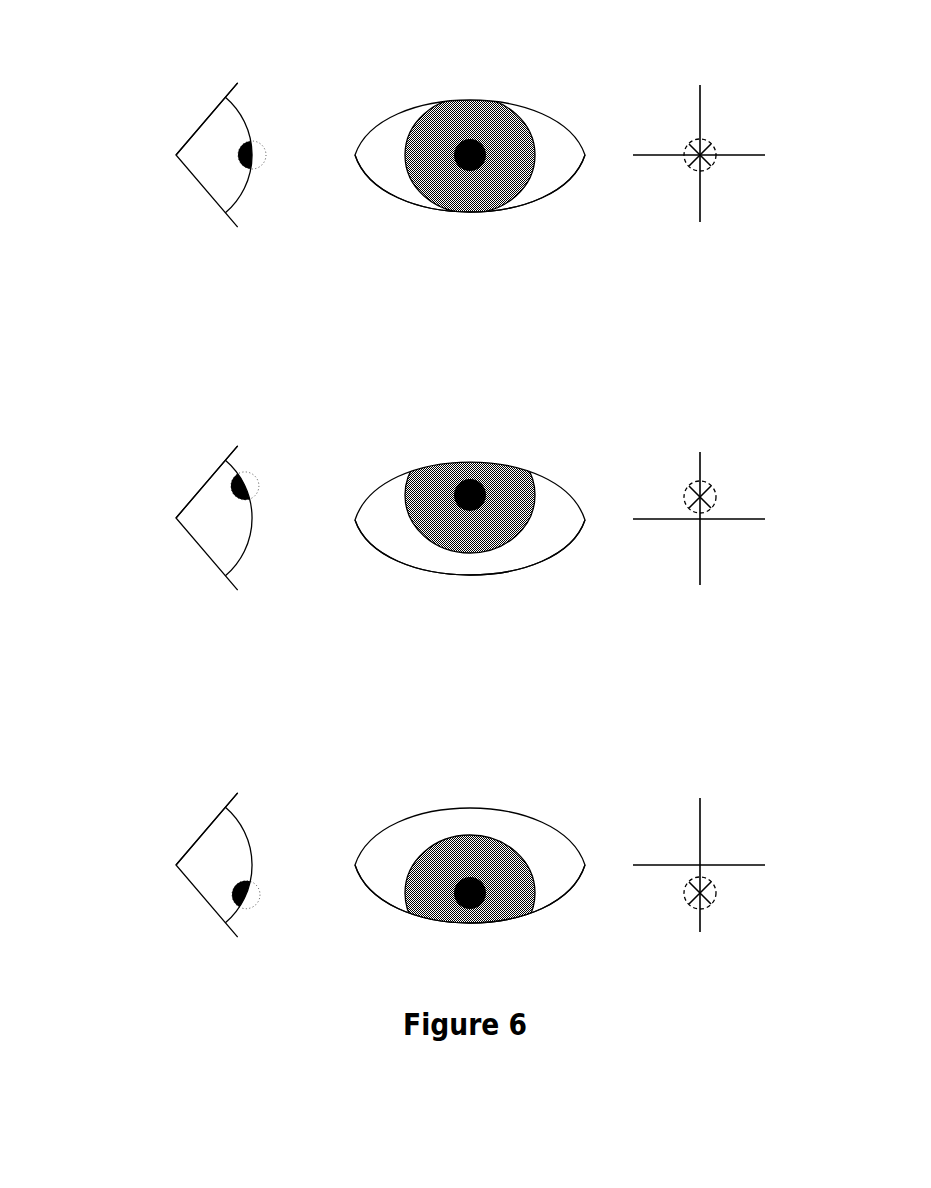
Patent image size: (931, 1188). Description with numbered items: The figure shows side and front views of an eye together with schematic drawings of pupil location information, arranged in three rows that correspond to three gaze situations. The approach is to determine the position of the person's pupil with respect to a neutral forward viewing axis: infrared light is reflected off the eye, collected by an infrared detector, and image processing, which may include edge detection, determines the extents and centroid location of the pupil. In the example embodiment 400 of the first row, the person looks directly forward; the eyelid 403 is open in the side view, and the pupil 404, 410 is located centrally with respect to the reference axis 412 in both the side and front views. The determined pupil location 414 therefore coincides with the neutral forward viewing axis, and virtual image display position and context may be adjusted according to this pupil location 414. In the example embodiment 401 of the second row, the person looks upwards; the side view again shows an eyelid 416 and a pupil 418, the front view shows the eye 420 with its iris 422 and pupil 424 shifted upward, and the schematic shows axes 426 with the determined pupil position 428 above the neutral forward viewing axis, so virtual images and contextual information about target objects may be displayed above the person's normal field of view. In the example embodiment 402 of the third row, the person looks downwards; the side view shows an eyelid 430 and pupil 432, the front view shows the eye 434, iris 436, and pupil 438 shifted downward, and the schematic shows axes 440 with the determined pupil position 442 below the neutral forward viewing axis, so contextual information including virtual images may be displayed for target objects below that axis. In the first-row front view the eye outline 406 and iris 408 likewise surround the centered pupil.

The example embodiment (looking directly forward) 400 is at (176, 138).
The example embodiment (looking upwards) 401 is at (178, 498).
The example embodiment (looking downwards) 402 is at (176, 845).
The eyelid 403 is at (223, 97).
The pupil 404 is at (253, 148).
The eye front view outline 406 is at (470, 141).
The iris 408 is at (518, 115).
The pupil 410 is at (480, 210).
The reference axis 412 is at (700, 128).
The pupil location 414 is at (710, 148).
The eyelid line 416 is at (230, 455).
The pupil (side view) 418 is at (250, 497).
The eye front view outline 420 is at (470, 497).
The iris 422 is at (537, 468).
The lower eyelid 424 is at (478, 553).
The gaze coordinate axes 426 is at (701, 487).
The determined pupil position 428 is at (718, 498).
The eyelid line 430 is at (232, 795).
The pupil (side view) 432 is at (258, 885).
The eye front view outline 434 is at (470, 849).
The iris 436 is at (510, 845).
The lower eyelid 438 is at (486, 921).
The gaze coordinate axes 440 is at (701, 835).
The determined pupil position 442 is at (718, 885).